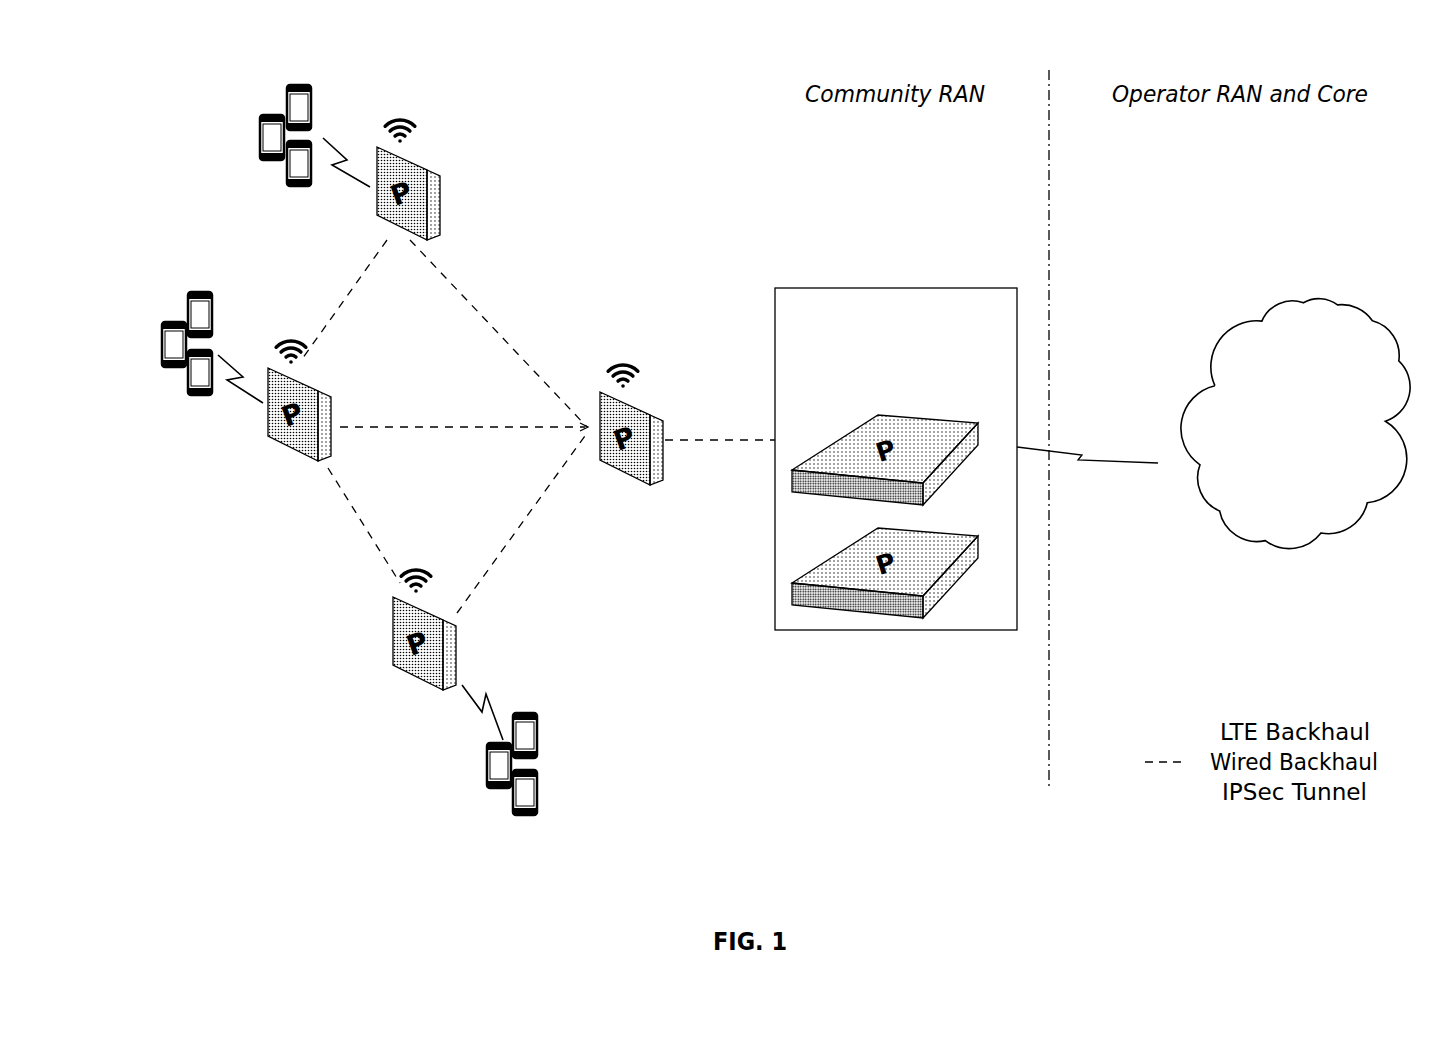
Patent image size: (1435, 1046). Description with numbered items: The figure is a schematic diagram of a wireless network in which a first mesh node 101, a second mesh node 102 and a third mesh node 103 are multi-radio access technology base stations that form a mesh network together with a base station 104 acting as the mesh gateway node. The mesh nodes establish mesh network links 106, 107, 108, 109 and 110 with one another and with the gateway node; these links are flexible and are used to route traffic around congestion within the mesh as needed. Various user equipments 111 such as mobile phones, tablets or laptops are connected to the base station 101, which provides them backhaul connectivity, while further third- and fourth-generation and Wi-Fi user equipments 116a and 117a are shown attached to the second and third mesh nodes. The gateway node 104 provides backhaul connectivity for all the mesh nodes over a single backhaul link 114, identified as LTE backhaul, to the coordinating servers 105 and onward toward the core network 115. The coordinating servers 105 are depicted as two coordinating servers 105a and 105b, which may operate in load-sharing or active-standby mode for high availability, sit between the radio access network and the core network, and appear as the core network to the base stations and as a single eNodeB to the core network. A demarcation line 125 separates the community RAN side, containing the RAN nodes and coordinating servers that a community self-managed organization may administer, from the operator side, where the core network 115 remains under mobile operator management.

The mesh node 1 101 is at (428, 158).
The mesh node 2 102 is at (267, 443).
The mesh node 3 103 is at (405, 683).
The mesh gateway node 104 is at (648, 397).
The coordinating servers 105 is at (896, 428).
The coordinating server 105a is at (955, 415).
The coordinating server 105b is at (955, 528).
The mesh network link 106 is at (343, 317).
The mesh network link 107 is at (512, 340).
The mesh network link 108 is at (352, 520).
The mesh network link 109 is at (538, 515).
The mesh network link 110 is at (458, 423).
The user equipments 111 is at (257, 120).
The backhaul link 114 is at (717, 447).
The core network 115 is at (1293, 273).
The 3G/4G/WiFi user equipments 116a is at (158, 347).
The 3G/4G/Wi-Fi user equipments 117a is at (483, 757).
The demarcation line 125 is at (1065, 202).